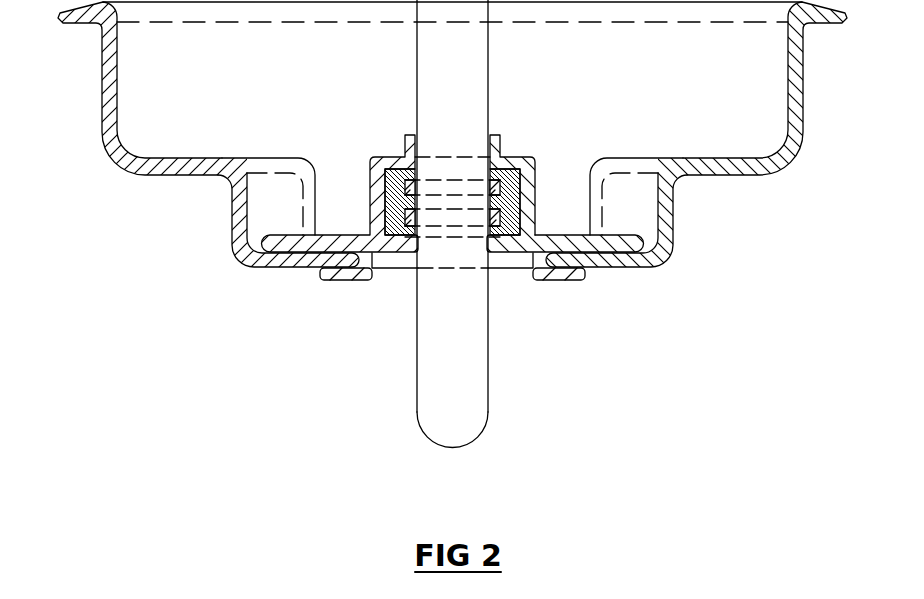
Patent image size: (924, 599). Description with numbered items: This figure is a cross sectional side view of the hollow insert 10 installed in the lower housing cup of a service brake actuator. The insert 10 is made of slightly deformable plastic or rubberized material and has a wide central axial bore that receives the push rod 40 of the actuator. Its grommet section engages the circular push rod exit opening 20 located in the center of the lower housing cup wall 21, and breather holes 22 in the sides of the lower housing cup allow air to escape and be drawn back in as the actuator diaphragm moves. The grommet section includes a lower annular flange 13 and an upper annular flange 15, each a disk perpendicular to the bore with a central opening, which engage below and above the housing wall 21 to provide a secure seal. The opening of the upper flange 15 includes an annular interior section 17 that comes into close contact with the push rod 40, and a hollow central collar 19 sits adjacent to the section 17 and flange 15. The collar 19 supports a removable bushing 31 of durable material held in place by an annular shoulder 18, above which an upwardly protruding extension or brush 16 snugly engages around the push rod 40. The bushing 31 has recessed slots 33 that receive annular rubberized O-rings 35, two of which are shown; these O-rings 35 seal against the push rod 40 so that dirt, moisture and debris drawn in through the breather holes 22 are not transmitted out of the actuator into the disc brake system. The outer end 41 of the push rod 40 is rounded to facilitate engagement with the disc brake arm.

The hollow insert 10 is at (456, 247).
The lower annular flange 13 is at (338, 278).
The upper annular flange 15 is at (288, 237).
The upwardly protruding extension or brush 16 is at (453, 197).
The annular interior section 17 is at (498, 245).
The annular shoulder 18 is at (376, 156).
The hollow central collar 19 is at (528, 217).
The push rod exit opening 20 is at (390, 262).
The lower housing cup wall 21 is at (246, 256).
The breather holes 22 is at (105, 83).
The removable bushing 31 is at (534, 168).
The recessed slot 33 is at (447, 217).
The O-ring 35 is at (424, 184).
The push rod 40 is at (462, 247).
The outer end of push rod 41 is at (437, 443).